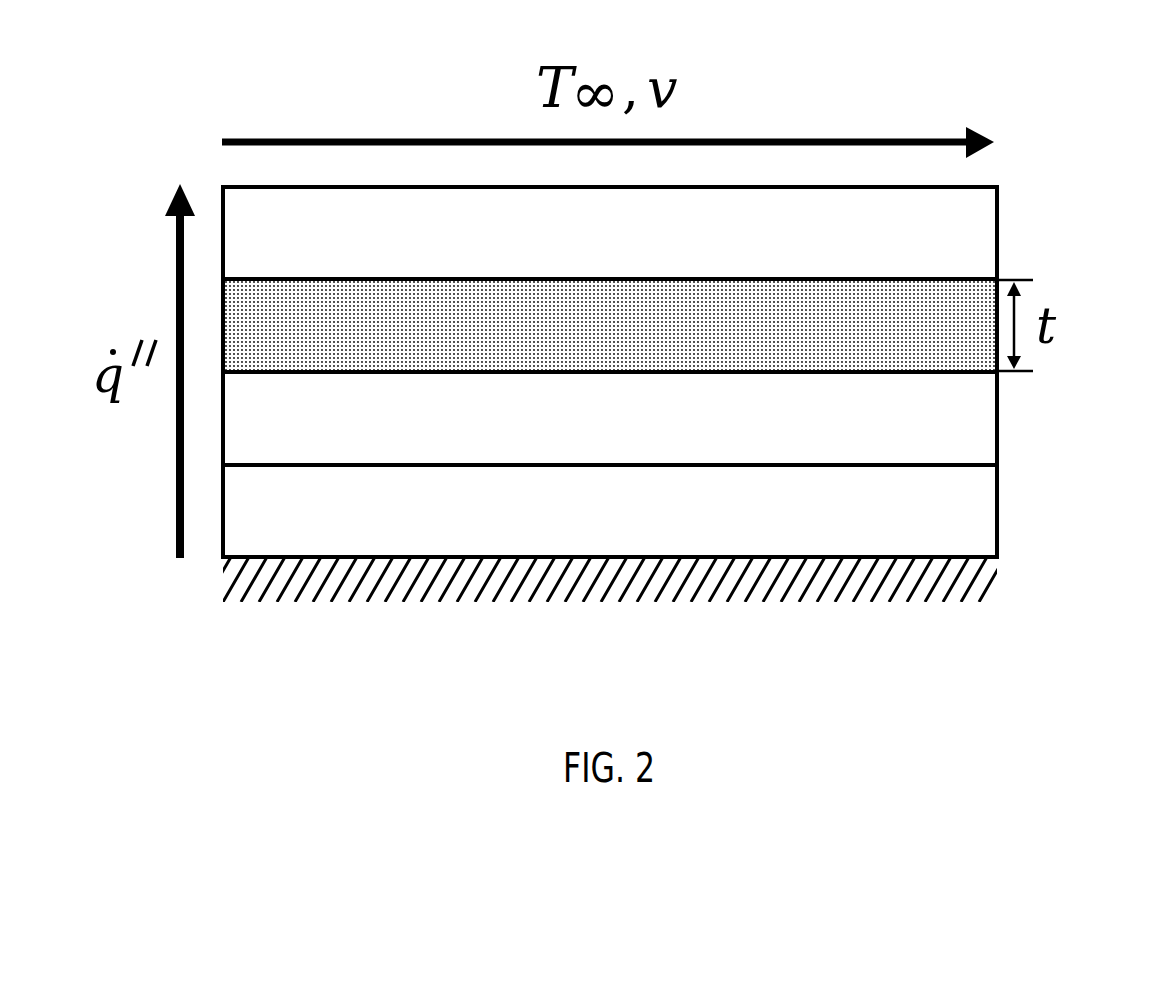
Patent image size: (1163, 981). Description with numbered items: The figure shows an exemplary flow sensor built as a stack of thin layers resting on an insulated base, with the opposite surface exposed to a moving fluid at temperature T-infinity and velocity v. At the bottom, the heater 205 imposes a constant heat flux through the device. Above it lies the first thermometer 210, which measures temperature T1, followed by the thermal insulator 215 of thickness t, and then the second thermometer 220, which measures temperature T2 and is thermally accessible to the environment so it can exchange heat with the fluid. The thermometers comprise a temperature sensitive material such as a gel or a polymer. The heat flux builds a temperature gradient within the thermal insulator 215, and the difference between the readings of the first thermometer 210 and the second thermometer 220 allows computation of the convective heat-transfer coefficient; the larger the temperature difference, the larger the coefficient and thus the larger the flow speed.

The second thermometer 220 is at (927, 214).
The thermal insulator 215 is at (249, 318).
The first thermometer 210 is at (936, 440).
The heater 205 is at (864, 542).